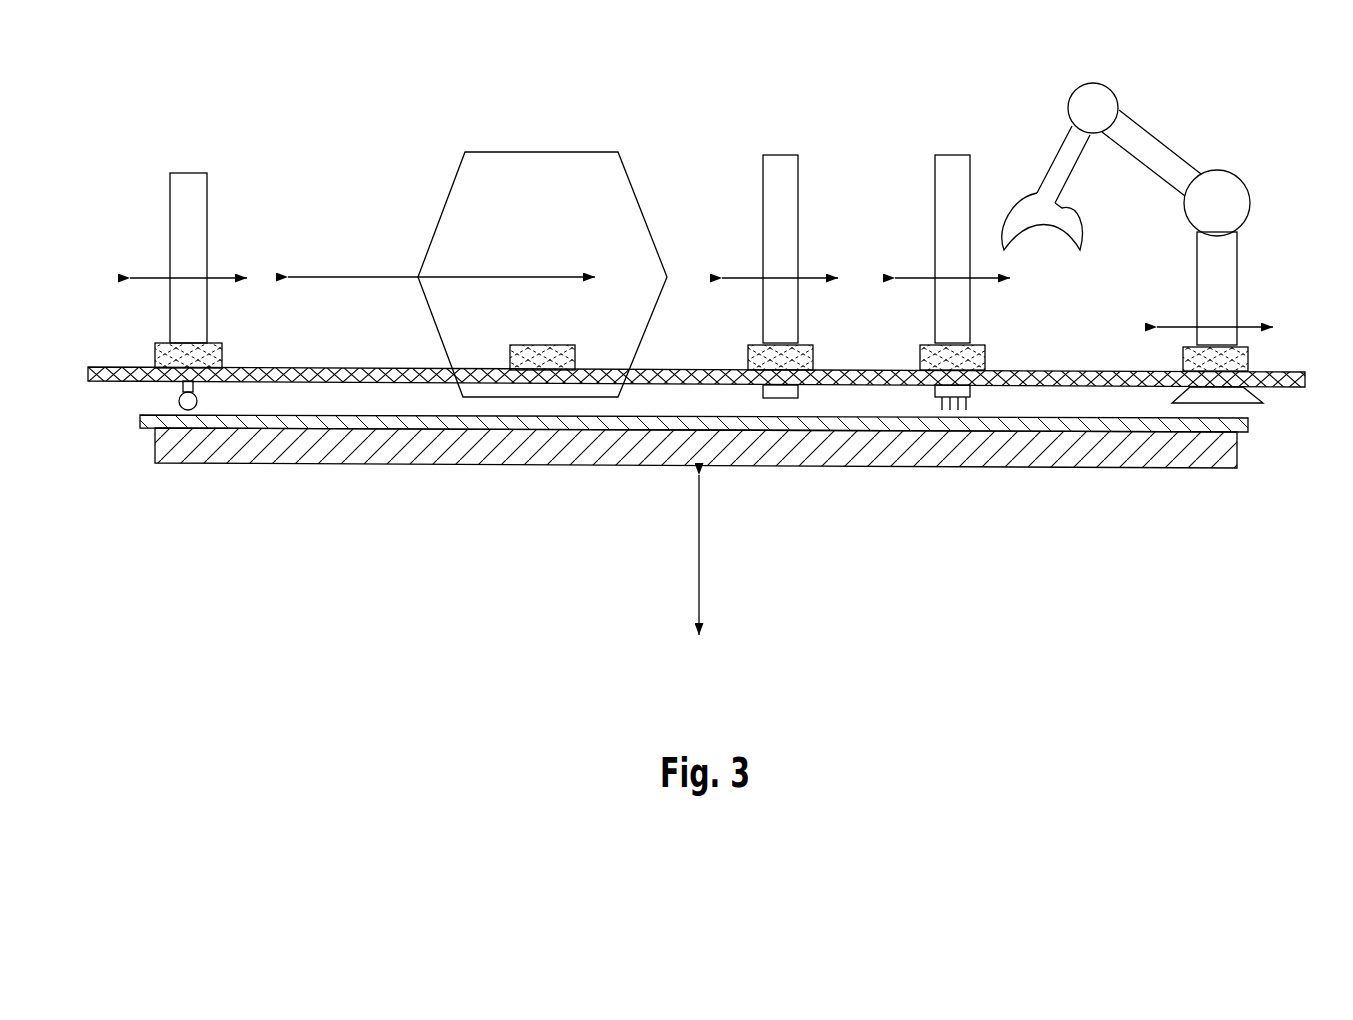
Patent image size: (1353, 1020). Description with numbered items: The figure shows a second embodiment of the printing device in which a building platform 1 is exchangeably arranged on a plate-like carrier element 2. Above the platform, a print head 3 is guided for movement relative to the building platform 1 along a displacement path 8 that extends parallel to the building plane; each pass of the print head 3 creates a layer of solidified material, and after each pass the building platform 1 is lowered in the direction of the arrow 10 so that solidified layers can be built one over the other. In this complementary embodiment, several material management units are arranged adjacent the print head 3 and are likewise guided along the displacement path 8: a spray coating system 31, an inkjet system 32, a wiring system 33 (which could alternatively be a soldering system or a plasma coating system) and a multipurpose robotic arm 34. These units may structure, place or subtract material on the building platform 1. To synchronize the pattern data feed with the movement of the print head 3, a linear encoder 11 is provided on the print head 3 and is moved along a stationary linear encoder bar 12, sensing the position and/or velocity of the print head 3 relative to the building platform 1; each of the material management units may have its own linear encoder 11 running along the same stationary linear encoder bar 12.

The building platform 1 is at (1098, 430).
The plate-like carrier element 2 is at (415, 445).
The print head 3 is at (522, 190).
The displacement path 8 is at (378, 270).
The arrow indicating lowering direction of the building platform 10 is at (699, 565).
The linear encoder 11 is at (215, 343).
The stationary linear encoder bar 12 is at (110, 367).
The spray coating system 31 is at (183, 195).
The inkjet system 32 is at (777, 192).
The wiring system 33 is at (950, 180).
The multipurpose robotic arm 34 is at (1155, 155).